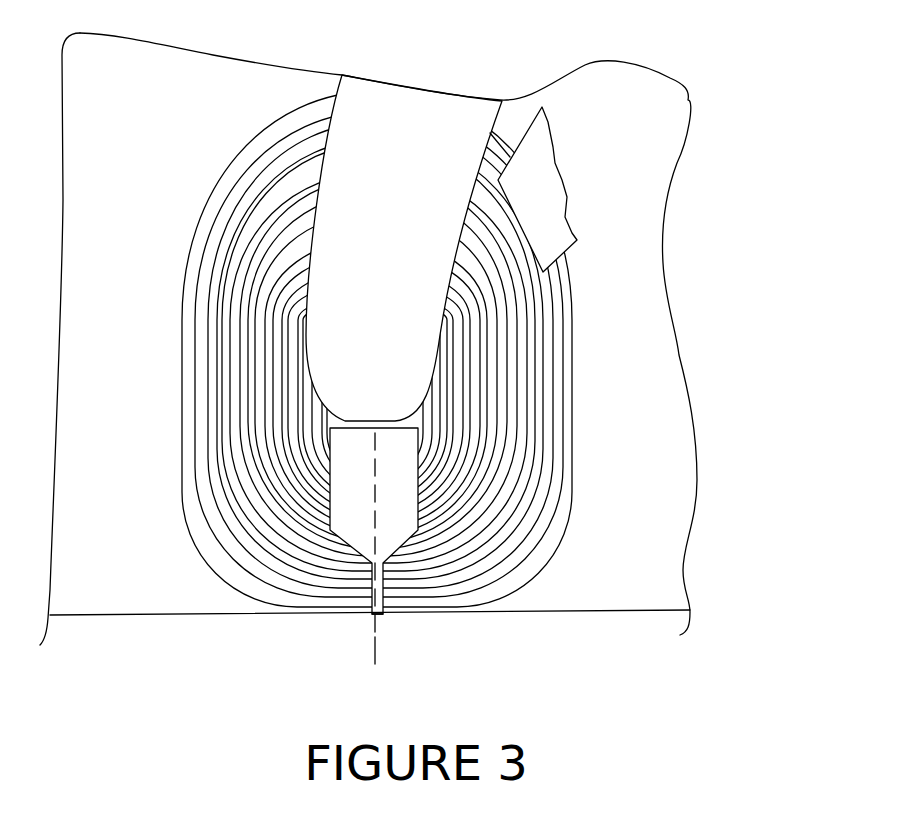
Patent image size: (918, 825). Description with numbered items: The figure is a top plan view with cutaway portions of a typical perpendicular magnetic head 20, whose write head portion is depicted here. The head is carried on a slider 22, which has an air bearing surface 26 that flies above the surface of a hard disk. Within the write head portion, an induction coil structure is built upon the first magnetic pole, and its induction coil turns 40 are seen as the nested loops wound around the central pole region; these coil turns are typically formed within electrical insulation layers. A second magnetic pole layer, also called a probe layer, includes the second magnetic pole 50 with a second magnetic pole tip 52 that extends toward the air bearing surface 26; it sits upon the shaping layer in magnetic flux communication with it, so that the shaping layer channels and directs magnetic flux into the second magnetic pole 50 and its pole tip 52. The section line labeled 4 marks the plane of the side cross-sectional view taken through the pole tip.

The perpendicular magnetic head 20 is at (150, 242).
The slider 22 is at (700, 340).
The air bearing surface 26 is at (212, 616).
The induction coil turns 40 is at (188, 467).
The second magnetic pole 50 is at (358, 517).
The second magnetic pole tip 52 is at (370, 626).
The section line 4- 4 is at (397, 440).